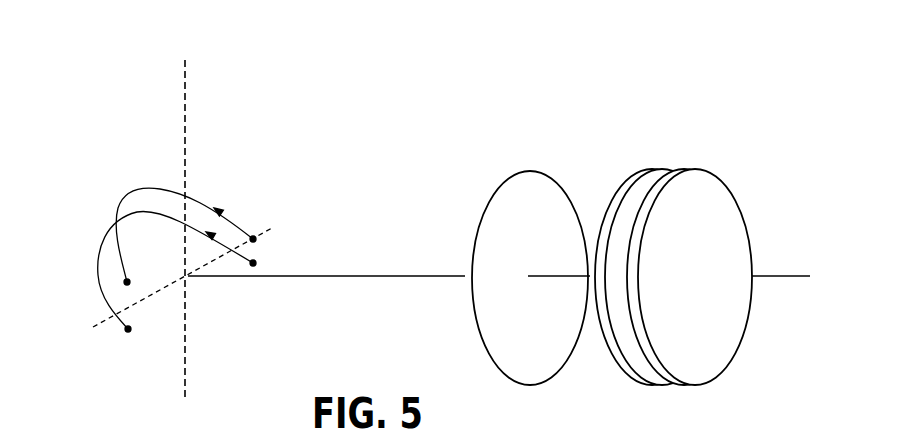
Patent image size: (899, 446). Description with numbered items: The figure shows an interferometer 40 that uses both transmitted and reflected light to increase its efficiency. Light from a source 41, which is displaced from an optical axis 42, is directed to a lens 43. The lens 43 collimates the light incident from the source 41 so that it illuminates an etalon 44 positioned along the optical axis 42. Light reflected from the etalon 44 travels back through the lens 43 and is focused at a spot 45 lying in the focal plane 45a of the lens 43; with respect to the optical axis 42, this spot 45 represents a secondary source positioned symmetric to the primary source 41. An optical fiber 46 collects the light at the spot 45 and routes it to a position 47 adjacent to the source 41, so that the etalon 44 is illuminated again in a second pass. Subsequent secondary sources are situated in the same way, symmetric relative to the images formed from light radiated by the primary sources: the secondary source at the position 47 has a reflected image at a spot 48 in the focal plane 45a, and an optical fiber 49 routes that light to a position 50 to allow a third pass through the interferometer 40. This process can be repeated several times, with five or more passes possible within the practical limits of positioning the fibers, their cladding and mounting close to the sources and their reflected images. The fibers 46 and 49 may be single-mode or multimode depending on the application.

The interferometer 40 is at (517, 55).
The source 41 is at (111, 305).
The optical axis 42 is at (382, 275).
The lens 43 is at (521, 172).
The etalon 44 is at (701, 157).
The spot 45 is at (254, 235).
The focal plane 45a is at (188, 92).
The optical fiber 46 is at (152, 186).
The position 47 is at (132, 278).
The spot 48 is at (258, 263).
The optical fiber 49 is at (97, 252).
The position 50 is at (127, 333).